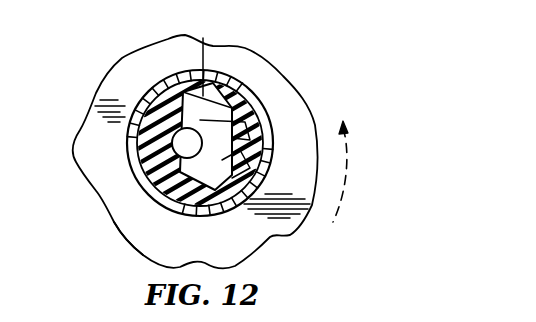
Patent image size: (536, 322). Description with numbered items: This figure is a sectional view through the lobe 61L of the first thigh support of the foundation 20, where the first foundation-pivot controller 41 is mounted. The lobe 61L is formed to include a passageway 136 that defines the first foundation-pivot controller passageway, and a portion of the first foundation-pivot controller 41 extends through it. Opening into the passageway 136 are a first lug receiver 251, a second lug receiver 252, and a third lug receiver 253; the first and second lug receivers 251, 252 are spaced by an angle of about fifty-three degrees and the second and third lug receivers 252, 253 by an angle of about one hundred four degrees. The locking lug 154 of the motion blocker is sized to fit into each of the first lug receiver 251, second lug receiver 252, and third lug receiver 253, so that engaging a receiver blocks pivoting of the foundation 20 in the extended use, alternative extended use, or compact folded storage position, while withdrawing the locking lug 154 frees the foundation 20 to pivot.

The first foundation-pivot controller 41 is at (137, 66).
The locking lug 154 is at (203, 38).
The foundation 20 is at (246, 57).
The first lug receiver 251 is at (244, 83).
The second lug receiver 252 is at (260, 112).
The third lug receiver 253 is at (257, 191).
The passageway 136 is at (183, 138).
The lobe 61L is at (148, 228).